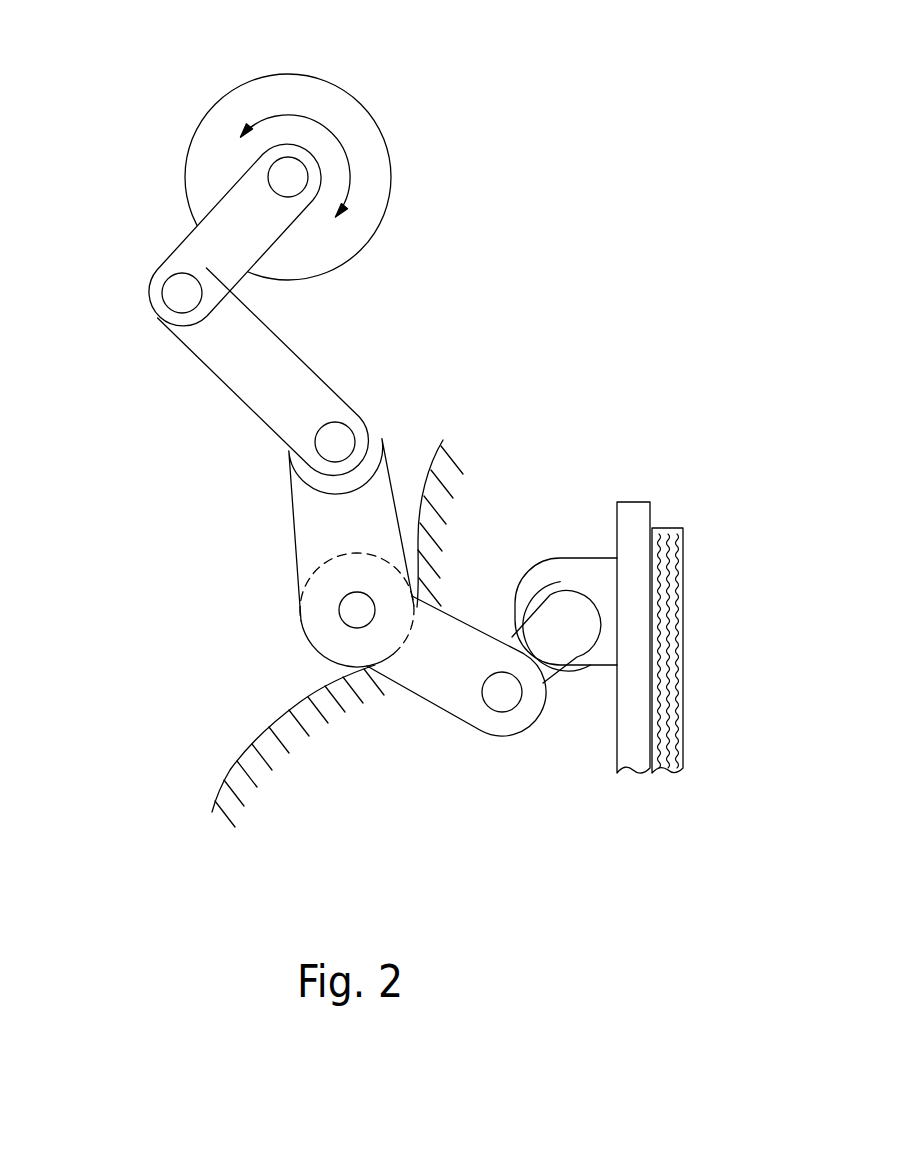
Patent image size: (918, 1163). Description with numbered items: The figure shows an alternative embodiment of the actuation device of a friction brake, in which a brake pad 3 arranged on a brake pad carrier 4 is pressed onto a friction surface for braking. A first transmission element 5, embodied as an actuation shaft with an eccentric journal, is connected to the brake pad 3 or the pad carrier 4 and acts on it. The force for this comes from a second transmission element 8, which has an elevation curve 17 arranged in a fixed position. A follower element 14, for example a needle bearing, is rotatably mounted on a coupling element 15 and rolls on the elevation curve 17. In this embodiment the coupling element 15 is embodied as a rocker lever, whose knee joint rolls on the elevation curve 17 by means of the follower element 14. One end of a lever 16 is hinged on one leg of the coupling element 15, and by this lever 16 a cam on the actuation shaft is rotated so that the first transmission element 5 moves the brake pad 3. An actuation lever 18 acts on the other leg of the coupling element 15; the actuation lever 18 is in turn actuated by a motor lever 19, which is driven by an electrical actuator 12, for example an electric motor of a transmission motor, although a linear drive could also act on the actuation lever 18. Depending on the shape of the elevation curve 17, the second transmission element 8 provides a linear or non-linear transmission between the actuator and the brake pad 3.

The brake pad 3 is at (677, 597).
The brake pad carrier 4 is at (632, 527).
The first transmission element 5 is at (553, 543).
The second transmission element 8 is at (341, 488).
The electrical actuator 12 is at (203, 115).
The follower element 14 is at (298, 610).
The coupling element 15 is at (447, 650).
The lever 16 is at (548, 638).
The elevation curve 17 is at (230, 770).
The actuation lever 18 is at (272, 377).
The motor lever 19 is at (212, 258).